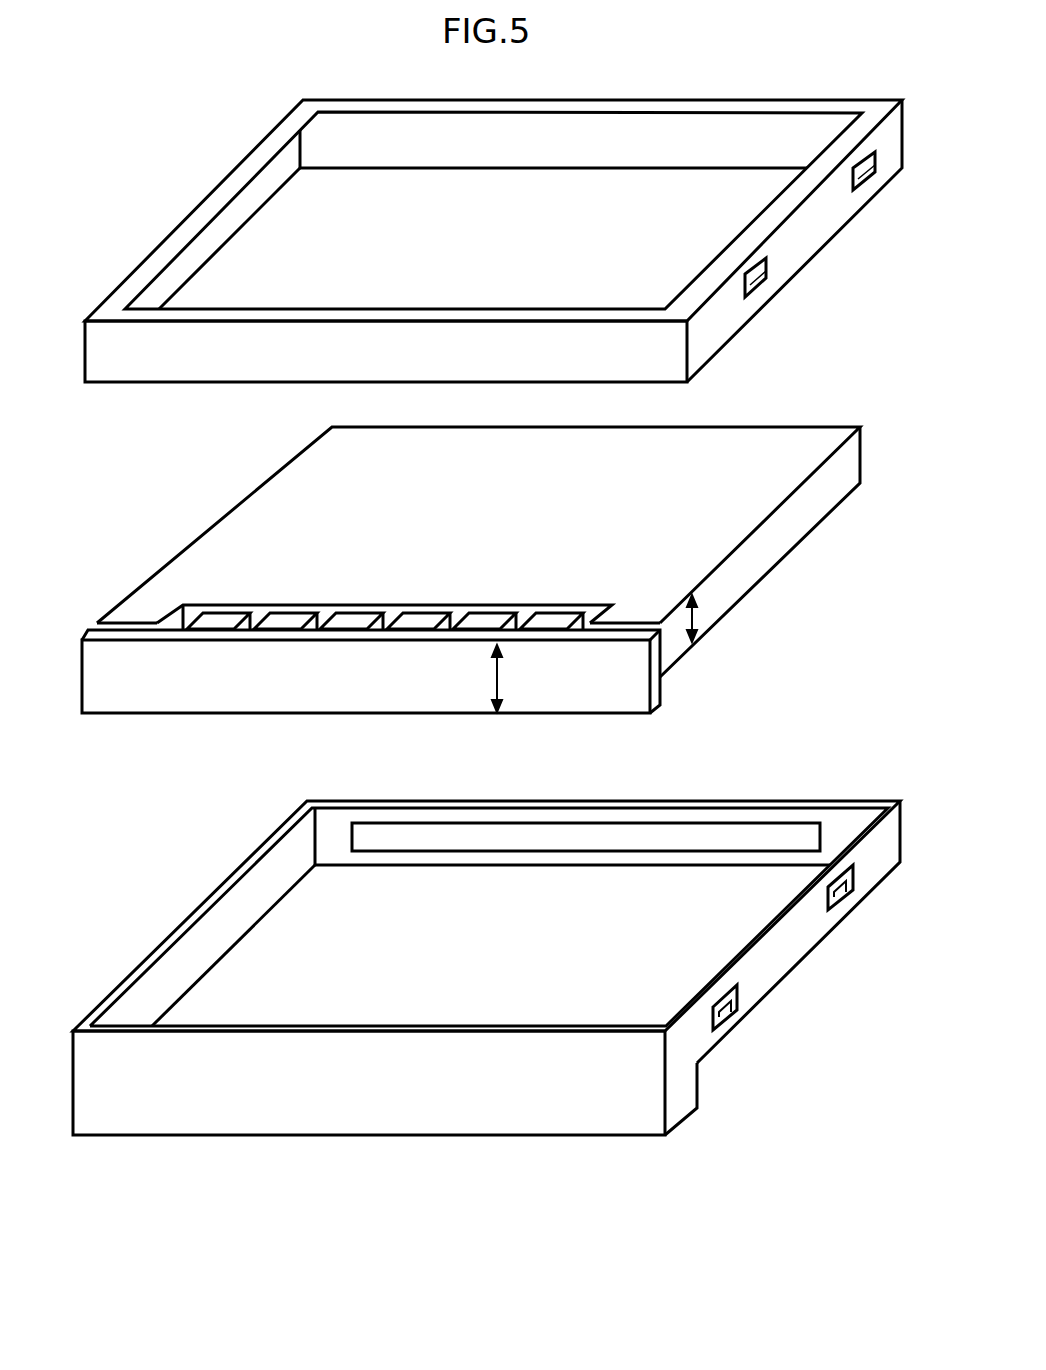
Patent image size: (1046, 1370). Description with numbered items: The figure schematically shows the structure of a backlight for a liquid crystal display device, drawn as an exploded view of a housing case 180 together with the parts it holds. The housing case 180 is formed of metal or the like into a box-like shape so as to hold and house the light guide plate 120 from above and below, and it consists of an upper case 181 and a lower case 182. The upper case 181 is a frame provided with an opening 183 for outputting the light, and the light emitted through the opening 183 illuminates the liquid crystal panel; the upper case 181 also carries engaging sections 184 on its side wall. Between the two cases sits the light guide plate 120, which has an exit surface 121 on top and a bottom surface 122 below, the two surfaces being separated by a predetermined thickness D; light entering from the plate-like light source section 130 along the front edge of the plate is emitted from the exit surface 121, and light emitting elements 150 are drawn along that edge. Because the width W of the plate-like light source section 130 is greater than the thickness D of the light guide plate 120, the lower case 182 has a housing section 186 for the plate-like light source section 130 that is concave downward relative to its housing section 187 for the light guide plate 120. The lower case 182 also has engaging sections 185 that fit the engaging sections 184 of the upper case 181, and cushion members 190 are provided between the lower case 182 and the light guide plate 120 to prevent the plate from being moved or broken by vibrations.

The light guide plate 120 is at (474, 598).
The exit surface 121 is at (282, 553).
The bottom surface 122 is at (735, 610).
The plate-like light source section 130 is at (313, 688).
The light emitting elements 150 is at (482, 622).
The housing case 180 is at (486, 984).
The upper case 181 is at (494, 227).
The lower case 182 is at (486, 943).
The opening 183 is at (293, 197).
The engaging sections 184 is at (752, 287).
The engaging sections 185 is at (730, 1013).
The housing section 186 is at (673, 1088).
The housing section 187 is at (293, 932).
The cushion members 190 is at (530, 830).